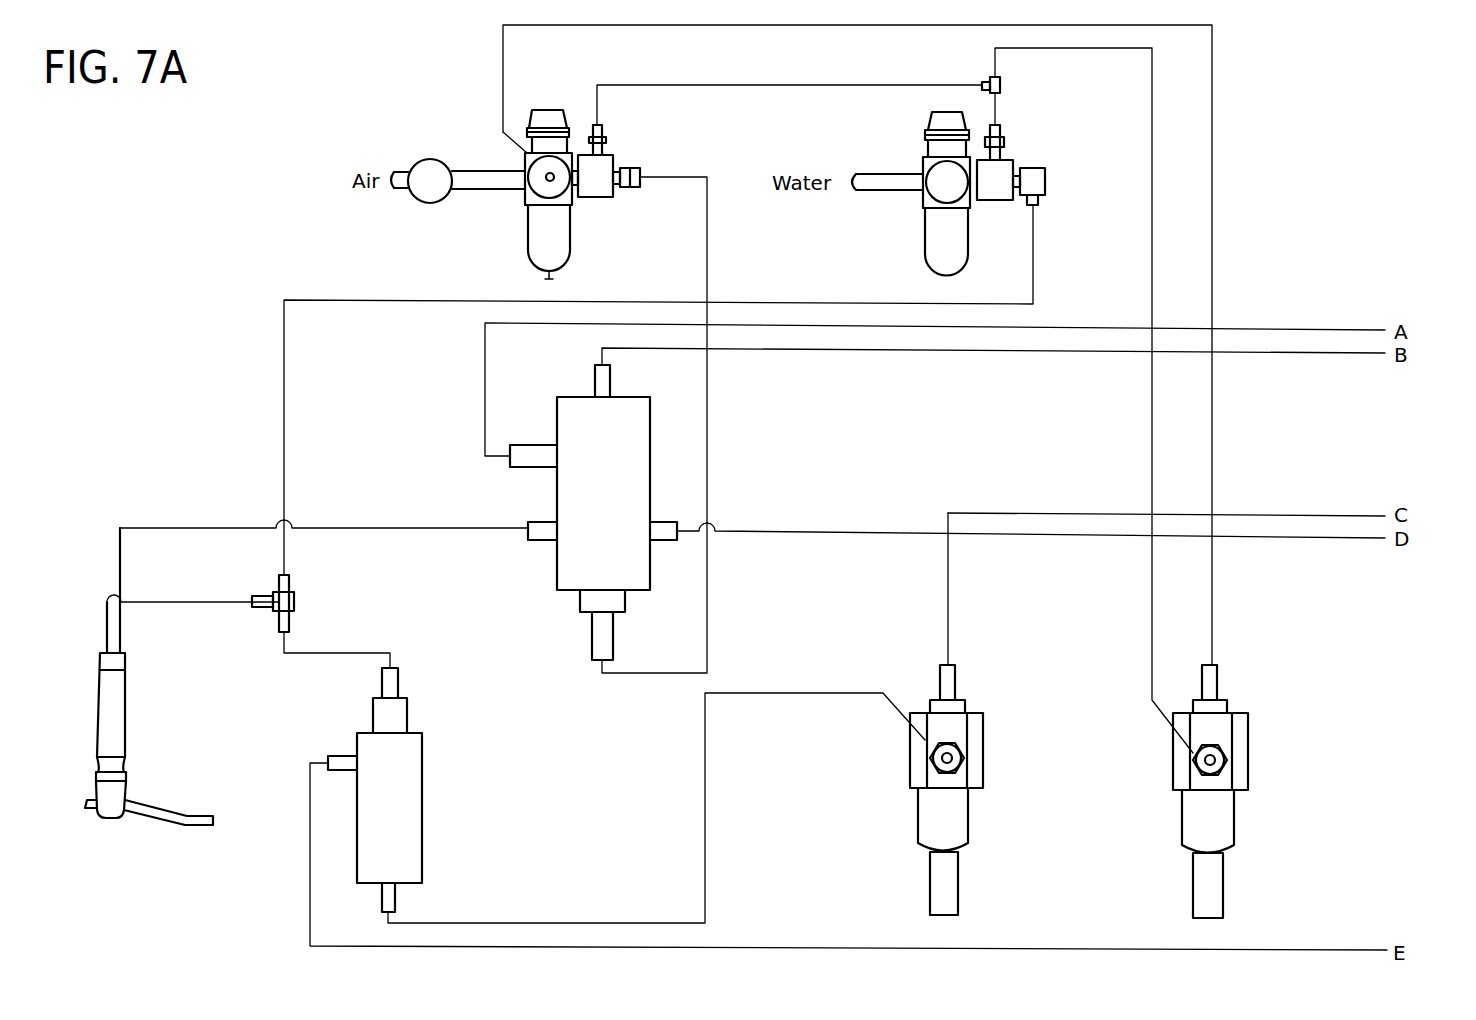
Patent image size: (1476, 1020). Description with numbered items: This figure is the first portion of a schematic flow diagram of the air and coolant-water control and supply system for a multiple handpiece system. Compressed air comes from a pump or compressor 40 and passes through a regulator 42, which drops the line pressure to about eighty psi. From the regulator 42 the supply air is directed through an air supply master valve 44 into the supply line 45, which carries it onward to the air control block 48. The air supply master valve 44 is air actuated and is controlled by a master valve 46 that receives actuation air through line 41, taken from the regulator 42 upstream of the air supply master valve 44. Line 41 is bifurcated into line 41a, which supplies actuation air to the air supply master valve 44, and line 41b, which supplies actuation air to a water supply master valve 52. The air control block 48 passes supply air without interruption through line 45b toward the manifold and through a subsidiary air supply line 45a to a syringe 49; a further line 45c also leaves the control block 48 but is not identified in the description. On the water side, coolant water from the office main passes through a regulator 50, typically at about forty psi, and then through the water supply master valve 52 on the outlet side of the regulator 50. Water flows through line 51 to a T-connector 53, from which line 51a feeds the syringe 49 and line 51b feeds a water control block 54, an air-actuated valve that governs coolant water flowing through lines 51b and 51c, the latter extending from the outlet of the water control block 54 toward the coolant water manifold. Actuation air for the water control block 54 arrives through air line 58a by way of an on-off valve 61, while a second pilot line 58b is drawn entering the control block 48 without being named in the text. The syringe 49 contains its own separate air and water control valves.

The pump or compressor 40 is at (428, 163).
The line 41 is at (503, 50).
The line 41a is at (744, 84).
The line 41b is at (997, 117).
The regulator 42 is at (549, 175).
The air supply master valve 44 is at (603, 167).
The supply line 45 is at (707, 210).
The subsidiary air supply line 45a is at (183, 525).
The line 45b is at (776, 530).
The air line branch A 45c is at (483, 440).
The master valve 46 is at (1225, 775).
The air control block 48 is at (590, 491).
The syringe 49 is at (115, 714).
The regulator 50 is at (953, 245).
The line 51 is at (857, 300).
The line 51a is at (104, 636).
The line 51b is at (378, 652).
The coolant water line 51c is at (308, 820).
The water supply master valve 52 is at (1003, 170).
The T-connector 53 is at (295, 602).
The water control block 54 is at (408, 763).
The air line 58a is at (948, 560).
The pilot line B 58b is at (852, 351).
The on-off valve 61 is at (958, 773).